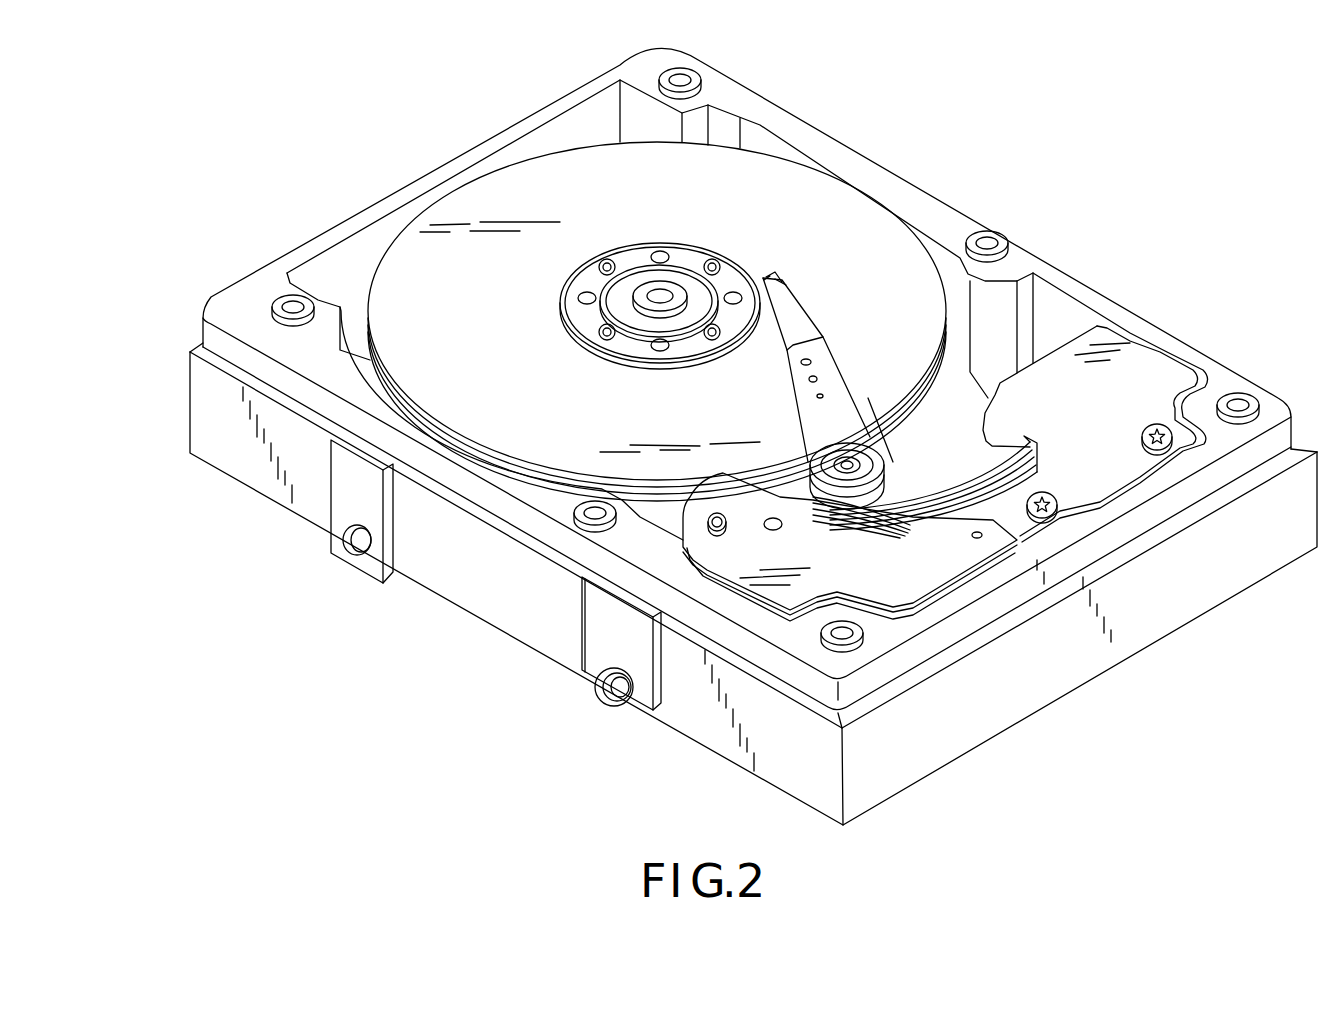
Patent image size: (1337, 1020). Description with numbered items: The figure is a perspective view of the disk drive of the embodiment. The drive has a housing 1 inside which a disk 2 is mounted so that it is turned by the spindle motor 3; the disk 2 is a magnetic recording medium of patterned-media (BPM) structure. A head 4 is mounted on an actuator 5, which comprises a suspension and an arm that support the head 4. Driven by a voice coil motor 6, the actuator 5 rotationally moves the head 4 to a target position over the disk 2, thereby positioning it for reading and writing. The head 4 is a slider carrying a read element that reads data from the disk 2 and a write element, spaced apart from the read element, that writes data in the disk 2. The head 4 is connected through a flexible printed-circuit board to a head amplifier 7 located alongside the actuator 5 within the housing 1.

The housing 1 is at (473, 603).
The disk 2 is at (787, 183).
The spindle motor 3 is at (672, 288).
The head 4 is at (782, 283).
The actuator 5 is at (837, 400).
The voice coil motor 6 is at (890, 580).
The head amplifier 7 is at (1137, 387).